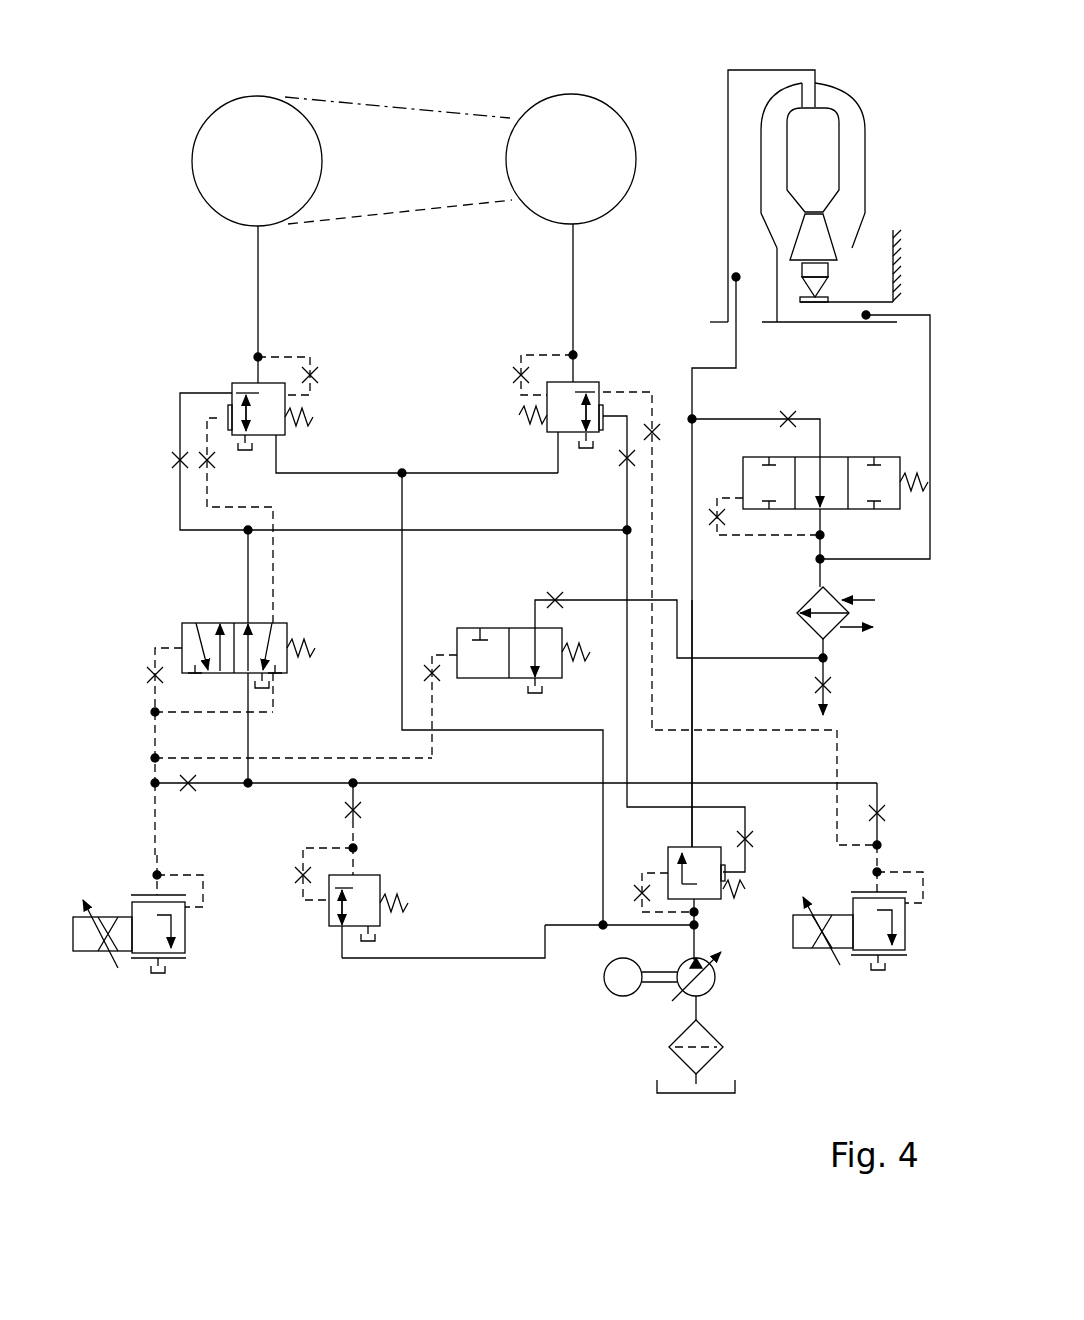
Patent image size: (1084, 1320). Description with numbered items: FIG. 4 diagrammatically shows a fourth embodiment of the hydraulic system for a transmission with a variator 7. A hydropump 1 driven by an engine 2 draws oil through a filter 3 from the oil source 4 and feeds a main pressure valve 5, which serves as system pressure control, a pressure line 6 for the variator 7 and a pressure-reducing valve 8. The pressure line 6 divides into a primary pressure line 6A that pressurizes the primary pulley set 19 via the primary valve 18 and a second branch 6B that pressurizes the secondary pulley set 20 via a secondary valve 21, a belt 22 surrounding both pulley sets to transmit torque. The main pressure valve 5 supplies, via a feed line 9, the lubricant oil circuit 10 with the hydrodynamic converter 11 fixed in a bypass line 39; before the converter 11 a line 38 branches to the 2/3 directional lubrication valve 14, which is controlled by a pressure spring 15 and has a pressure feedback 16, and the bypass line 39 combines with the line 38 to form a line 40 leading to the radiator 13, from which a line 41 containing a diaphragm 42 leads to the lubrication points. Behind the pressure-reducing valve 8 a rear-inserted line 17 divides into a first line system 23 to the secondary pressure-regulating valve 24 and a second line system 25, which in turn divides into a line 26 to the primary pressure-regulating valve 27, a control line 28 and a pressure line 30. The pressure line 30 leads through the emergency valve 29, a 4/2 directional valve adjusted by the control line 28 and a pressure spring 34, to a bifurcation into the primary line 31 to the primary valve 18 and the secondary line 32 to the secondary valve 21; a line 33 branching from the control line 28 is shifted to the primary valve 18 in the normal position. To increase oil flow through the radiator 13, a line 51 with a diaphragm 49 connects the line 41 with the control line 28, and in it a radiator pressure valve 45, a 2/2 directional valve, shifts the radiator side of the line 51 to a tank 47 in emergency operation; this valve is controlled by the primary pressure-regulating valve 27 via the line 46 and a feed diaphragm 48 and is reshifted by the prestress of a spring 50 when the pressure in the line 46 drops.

The hydropump 1 is at (713, 967).
The engine 2 is at (604, 992).
The filter 3 is at (708, 1032).
The oil source 4 is at (735, 1093).
The main pressure valve 5 is at (668, 853).
The pressure line 6 is at (525, 730).
The primary pressure line 6A is at (258, 270).
The second branch 6B is at (573, 268).
The variator 7 is at (620, 106).
The pressure-reducing valve 8 is at (380, 880).
The feed line 9 is at (692, 714).
The lubricant oil circuit 10 is at (702, 362).
The hydrodynamic converter 11 is at (840, 97).
The radiator 13 is at (798, 613).
The 2/3 directional lubrication valve 14 is at (743, 472).
The pressure spring 15 is at (910, 470).
The pressure feedback 16 is at (773, 533).
The rear-inserted line 17 is at (355, 836).
The primary valve 18 is at (232, 383).
The primary pulley set 19 is at (222, 138).
The secondary pulley set 20 is at (538, 125).
The secondary valve 21 is at (575, 380).
The belt 22 is at (420, 110).
The first line system 23 is at (400, 783).
The secondary pressure-regulating valve 24 is at (905, 948).
The second line system 25 is at (320, 783).
The line 26 is at (157, 855).
The primary pressure-regulating valve 27 is at (186, 945).
The control line 28 is at (155, 648).
The emergency valve 29 is at (188, 623).
The pressure line 30 is at (248, 732).
The primary line 31 is at (180, 508).
The secondary line 32 is at (617, 418).
The line 33 is at (273, 583).
The pressure spring 34 is at (315, 650).
The line 38 is at (757, 419).
The bypass line 39 is at (928, 328).
The line 40 is at (825, 580).
The line 41 is at (825, 648).
The diaphragm 42 is at (830, 678).
The radiator pressure valve 45 is at (482, 623).
The line 46 is at (432, 742).
The tank 47 is at (530, 692).
The feed diaphragm 48 is at (430, 673).
The diaphragm 49 is at (550, 593).
The spring 50 is at (592, 648).
The line 51 is at (607, 600).